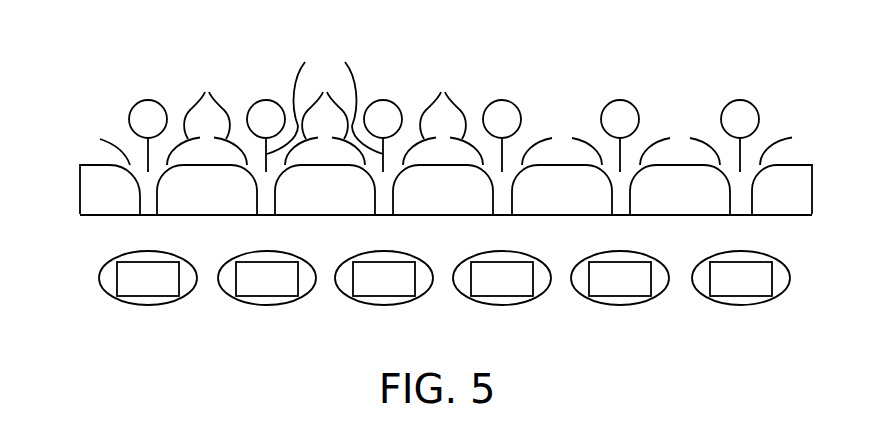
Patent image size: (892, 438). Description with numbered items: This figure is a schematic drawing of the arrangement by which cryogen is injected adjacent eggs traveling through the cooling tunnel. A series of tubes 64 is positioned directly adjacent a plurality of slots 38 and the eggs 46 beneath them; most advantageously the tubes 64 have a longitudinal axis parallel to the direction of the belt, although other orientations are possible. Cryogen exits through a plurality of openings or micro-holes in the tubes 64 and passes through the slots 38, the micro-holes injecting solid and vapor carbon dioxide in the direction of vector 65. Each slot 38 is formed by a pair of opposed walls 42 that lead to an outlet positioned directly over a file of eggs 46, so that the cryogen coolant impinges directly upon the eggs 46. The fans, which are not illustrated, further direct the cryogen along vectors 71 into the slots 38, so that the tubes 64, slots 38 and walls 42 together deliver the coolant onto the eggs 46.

The slot 38 is at (267, 203).
The opposed walls 42 is at (160, 203).
The eggs 46 is at (360, 305).
The tubes 64 is at (266, 100).
The vector 65 is at (148, 152).
The vectors 71 is at (479, 117).